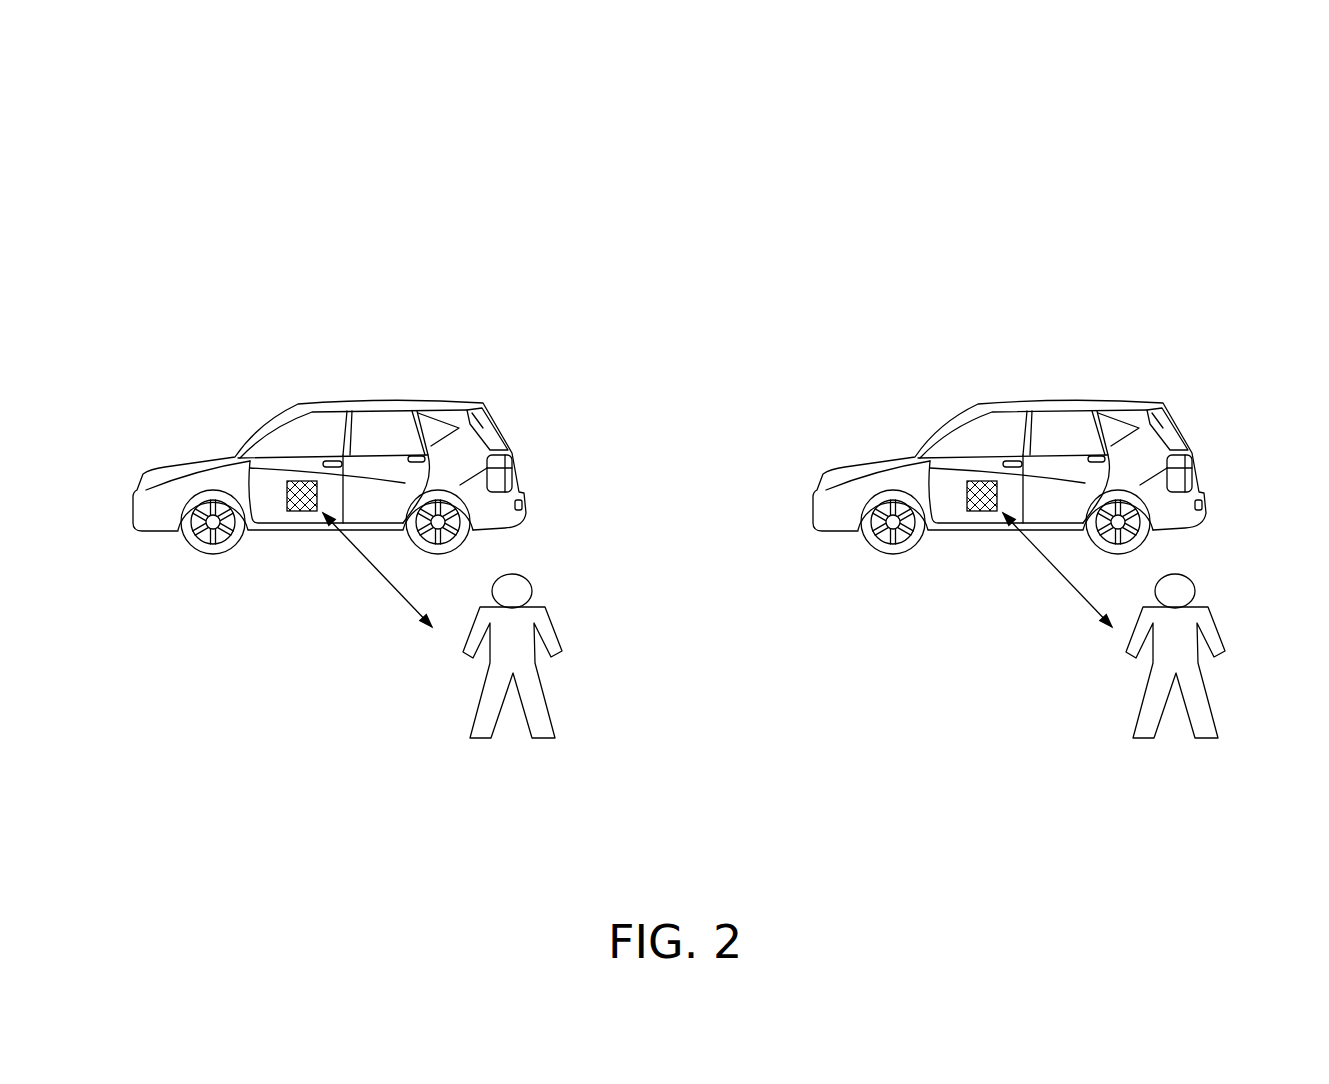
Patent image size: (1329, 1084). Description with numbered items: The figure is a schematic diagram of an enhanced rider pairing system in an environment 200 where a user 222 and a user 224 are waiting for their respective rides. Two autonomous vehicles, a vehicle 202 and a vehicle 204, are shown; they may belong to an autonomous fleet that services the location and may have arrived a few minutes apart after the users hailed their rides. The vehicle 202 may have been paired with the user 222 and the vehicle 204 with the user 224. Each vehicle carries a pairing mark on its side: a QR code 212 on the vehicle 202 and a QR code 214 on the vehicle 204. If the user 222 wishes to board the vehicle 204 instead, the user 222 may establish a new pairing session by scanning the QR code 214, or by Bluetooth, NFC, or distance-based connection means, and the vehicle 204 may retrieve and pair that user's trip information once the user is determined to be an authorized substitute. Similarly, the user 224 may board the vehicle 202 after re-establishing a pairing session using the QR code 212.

The environment 200 is at (1222, 63).
The vehicle 202 is at (1045, 400).
The vehicle 204 is at (387, 400).
The QR code 212 is at (982, 513).
The QR code 214 is at (302, 513).
The user 222 is at (540, 602).
The user 224 is at (1202, 600).